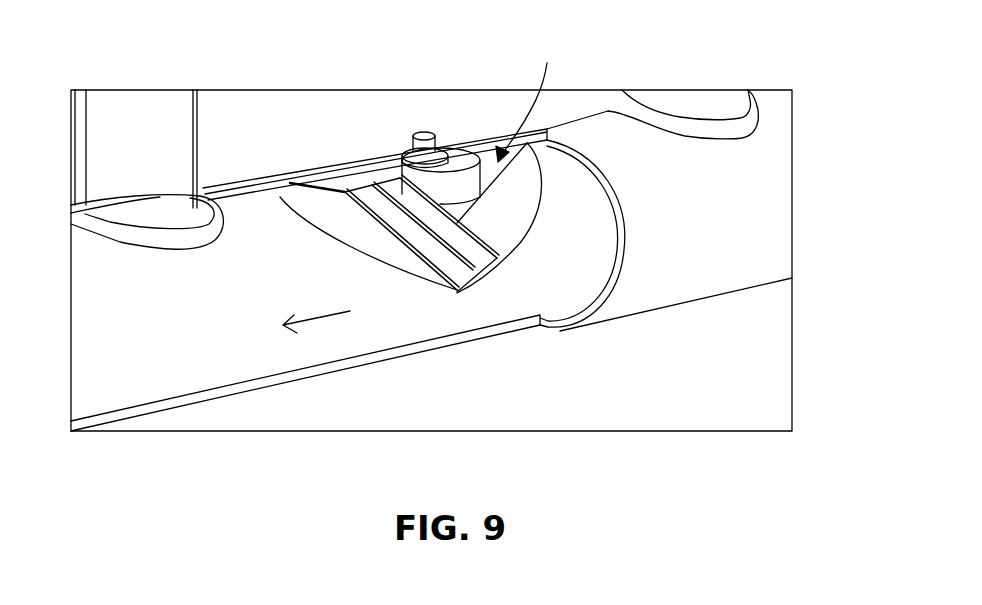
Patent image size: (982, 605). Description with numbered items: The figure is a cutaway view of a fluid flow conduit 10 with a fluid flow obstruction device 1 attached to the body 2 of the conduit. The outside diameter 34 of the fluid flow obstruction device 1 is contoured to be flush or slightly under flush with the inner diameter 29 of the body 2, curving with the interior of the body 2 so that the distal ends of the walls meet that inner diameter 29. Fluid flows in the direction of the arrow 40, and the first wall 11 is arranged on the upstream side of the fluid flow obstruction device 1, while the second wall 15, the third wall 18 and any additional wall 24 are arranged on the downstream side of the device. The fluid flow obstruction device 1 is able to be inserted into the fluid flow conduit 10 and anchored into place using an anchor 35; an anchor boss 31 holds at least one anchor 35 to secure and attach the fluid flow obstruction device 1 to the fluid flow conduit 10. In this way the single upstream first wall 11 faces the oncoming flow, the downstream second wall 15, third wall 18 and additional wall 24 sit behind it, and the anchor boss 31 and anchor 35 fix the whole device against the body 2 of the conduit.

The fluid flow conduit 10 is at (797, 55).
The fluid flow obstruction device 1 is at (525, 102).
The body 2 is at (663, 278).
The first wall 11 is at (517, 240).
The second wall 15 is at (425, 273).
The third wall 18 is at (477, 250).
The additional wall 24 is at (457, 265).
The inner diameter 29 is at (268, 217).
The anchor boss 31 is at (453, 180).
The outside diameter 34 is at (543, 163).
The anchor 35 is at (424, 133).
The arrow 40 is at (347, 312).